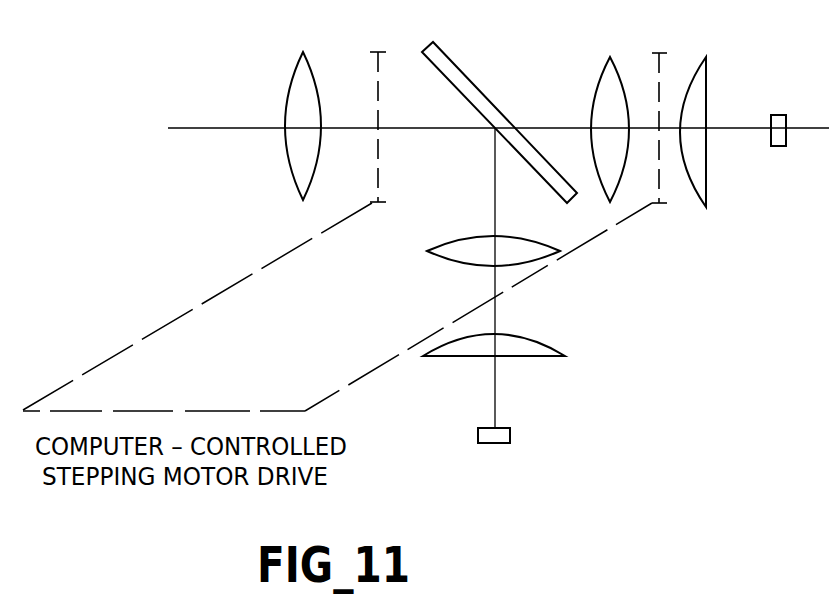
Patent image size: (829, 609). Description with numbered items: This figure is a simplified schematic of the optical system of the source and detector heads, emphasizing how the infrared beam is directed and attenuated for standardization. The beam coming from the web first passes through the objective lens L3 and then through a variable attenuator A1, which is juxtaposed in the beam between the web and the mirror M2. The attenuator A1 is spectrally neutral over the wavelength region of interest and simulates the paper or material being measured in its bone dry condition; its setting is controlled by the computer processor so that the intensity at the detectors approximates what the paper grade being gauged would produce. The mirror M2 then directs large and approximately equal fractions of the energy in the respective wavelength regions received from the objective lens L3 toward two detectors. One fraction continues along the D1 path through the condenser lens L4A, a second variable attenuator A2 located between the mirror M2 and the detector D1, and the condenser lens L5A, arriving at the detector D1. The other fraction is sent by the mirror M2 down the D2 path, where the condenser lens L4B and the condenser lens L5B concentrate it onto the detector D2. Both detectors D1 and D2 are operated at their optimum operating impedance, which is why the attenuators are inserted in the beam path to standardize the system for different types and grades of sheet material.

The objective lens L3 is at (303, 101).
The variable attenuator A1 is at (372, 102).
The mirror M2 is at (495, 102).
The condenser lens L4A is at (607, 103).
The second variable attenuator A2 is at (662, 104).
The condenser lens L5A is at (710, 106).
The detector D1 is at (772, 92).
The condenser lens L4B is at (452, 253).
The condenser lens L5B is at (530, 351).
The detector D2 is at (528, 437).